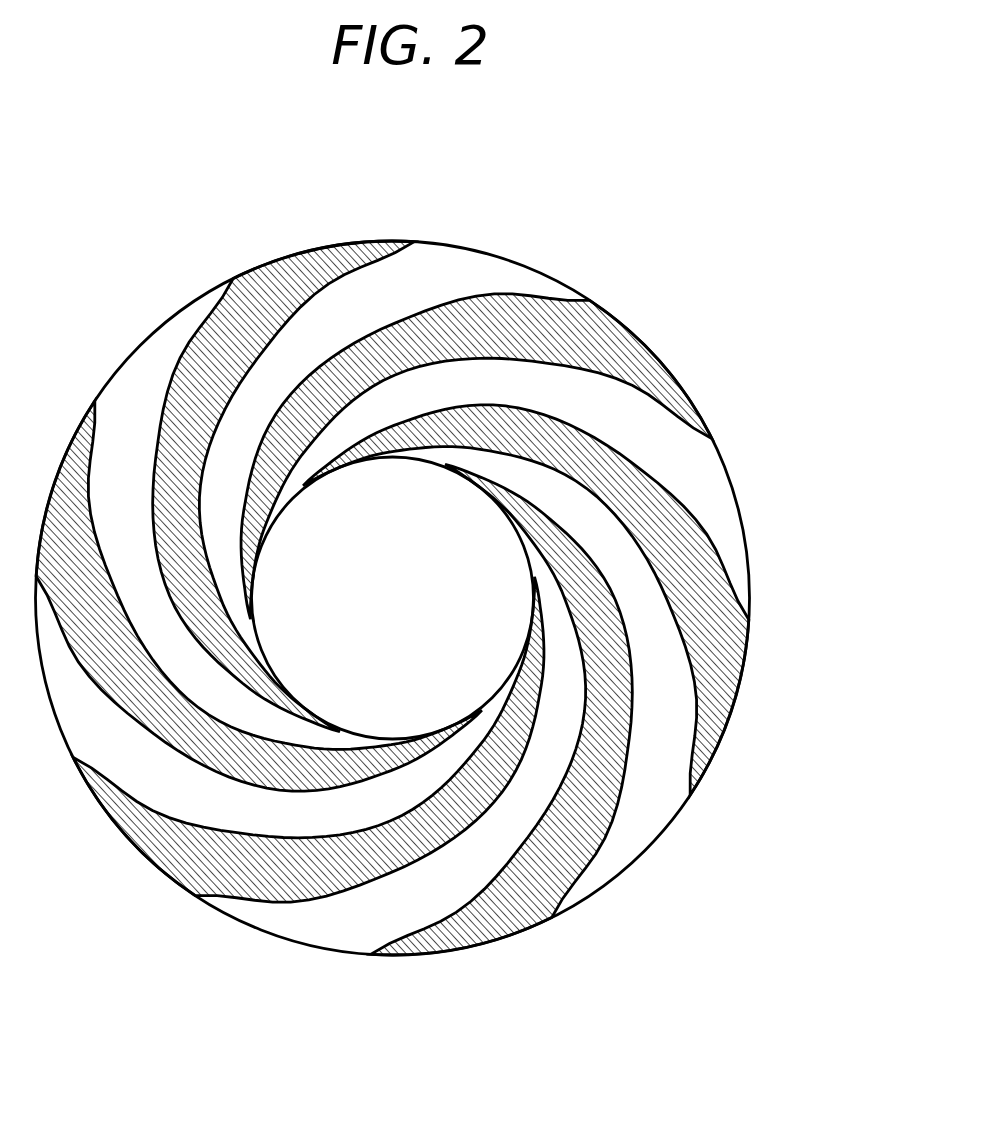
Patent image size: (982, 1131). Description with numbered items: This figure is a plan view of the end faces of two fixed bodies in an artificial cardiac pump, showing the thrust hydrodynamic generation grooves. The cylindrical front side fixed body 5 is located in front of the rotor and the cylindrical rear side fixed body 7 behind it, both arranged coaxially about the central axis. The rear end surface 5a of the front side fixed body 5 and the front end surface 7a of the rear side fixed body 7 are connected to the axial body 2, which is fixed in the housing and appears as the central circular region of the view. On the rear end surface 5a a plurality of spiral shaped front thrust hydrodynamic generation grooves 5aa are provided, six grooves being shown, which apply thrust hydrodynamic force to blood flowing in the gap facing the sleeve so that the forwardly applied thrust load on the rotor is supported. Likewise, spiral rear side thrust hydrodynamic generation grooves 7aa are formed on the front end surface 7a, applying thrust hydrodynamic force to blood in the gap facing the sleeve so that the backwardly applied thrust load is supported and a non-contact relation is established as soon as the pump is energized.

The axial body 2 is at (470, 572).
The front side fixed body 5 is at (491, 565).
The rear side fixed body 7 is at (491, 565).
The rear end surface of the front side fixed body 5a is at (393, 565).
The front end surface of the rear side fixed body 7a is at (472, 277).
The front thrust hydrodynamic generation grooves 5aa is at (491, 565).
The rear side thrust hydrodynamic generation grooves 7aa is at (285, 277).